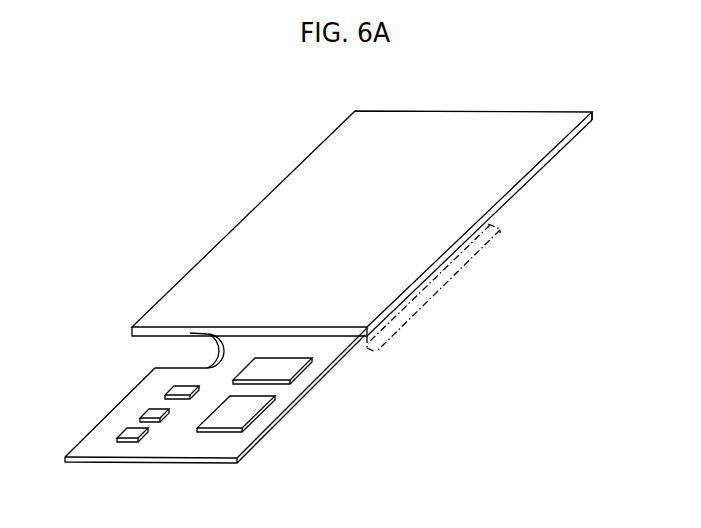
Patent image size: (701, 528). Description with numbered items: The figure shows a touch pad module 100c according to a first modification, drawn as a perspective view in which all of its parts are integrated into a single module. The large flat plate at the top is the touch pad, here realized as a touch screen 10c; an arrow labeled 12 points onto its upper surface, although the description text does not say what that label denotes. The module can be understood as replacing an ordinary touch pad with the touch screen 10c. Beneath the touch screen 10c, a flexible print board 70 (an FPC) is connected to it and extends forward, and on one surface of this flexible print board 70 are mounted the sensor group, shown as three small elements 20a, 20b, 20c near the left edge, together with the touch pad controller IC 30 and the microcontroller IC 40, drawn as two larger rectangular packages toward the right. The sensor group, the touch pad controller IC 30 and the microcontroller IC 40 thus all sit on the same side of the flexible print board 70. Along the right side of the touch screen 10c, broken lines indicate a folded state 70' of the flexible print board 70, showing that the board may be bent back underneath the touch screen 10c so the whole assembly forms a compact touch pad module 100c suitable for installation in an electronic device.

The touch pad module 100c is at (406, 513).
The cover plate (upper layer) 12 is at (469, 141).
The touch pad (touch screen) 10c is at (593, 113).
The folded state 70' is at (438, 288).
The flexible print board (FPC) 70 is at (216, 420).
The first contact pad / chip 20a is at (176, 389).
The second contact pad / chip 20b is at (153, 413).
The third contact pad / chip 20c is at (128, 433).
The microcontroller IC 40 is at (282, 372).
The touch pad controller IC 30 is at (237, 415).